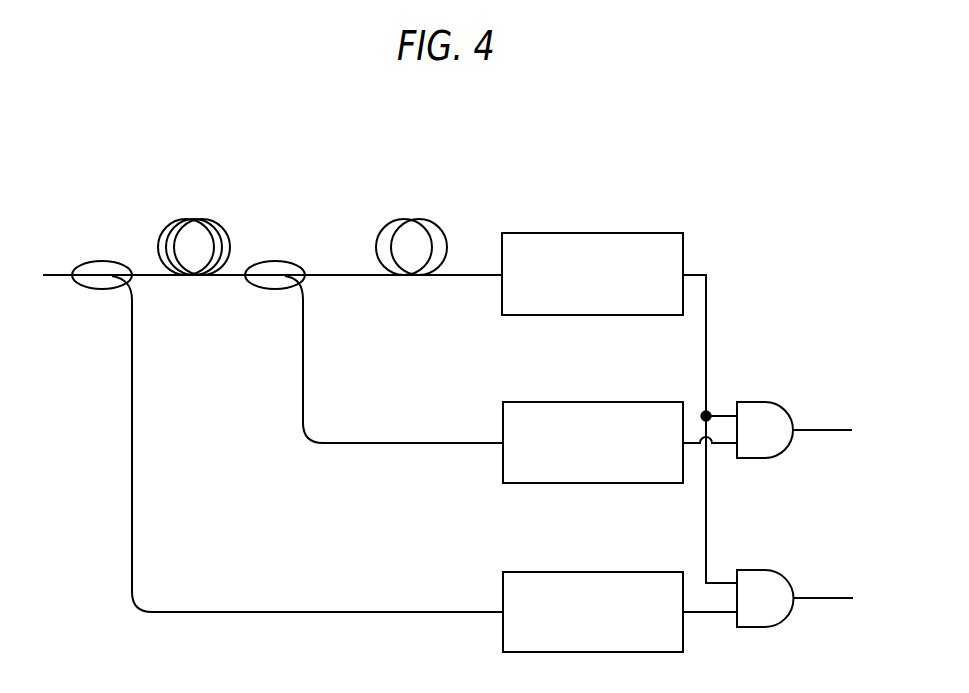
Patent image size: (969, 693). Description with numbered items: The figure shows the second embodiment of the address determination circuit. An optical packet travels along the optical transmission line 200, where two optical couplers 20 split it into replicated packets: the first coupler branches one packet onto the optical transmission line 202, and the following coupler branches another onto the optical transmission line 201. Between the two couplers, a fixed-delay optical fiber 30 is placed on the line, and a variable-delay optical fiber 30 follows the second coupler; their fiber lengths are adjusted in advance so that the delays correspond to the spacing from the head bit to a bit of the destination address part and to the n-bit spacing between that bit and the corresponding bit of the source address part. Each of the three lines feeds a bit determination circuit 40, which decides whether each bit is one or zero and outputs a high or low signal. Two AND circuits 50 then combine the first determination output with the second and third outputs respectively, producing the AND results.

The optical coupler 20 is at (105, 262).
The delay optical fiber 30 is at (188, 218).
The bit determination circuit 40 is at (590, 233).
The AND circuit 50 is at (763, 400).
The optical transmission line 200 is at (480, 273).
The optical transmission line 201 is at (447, 447).
The optical transmission line 202 is at (190, 610).